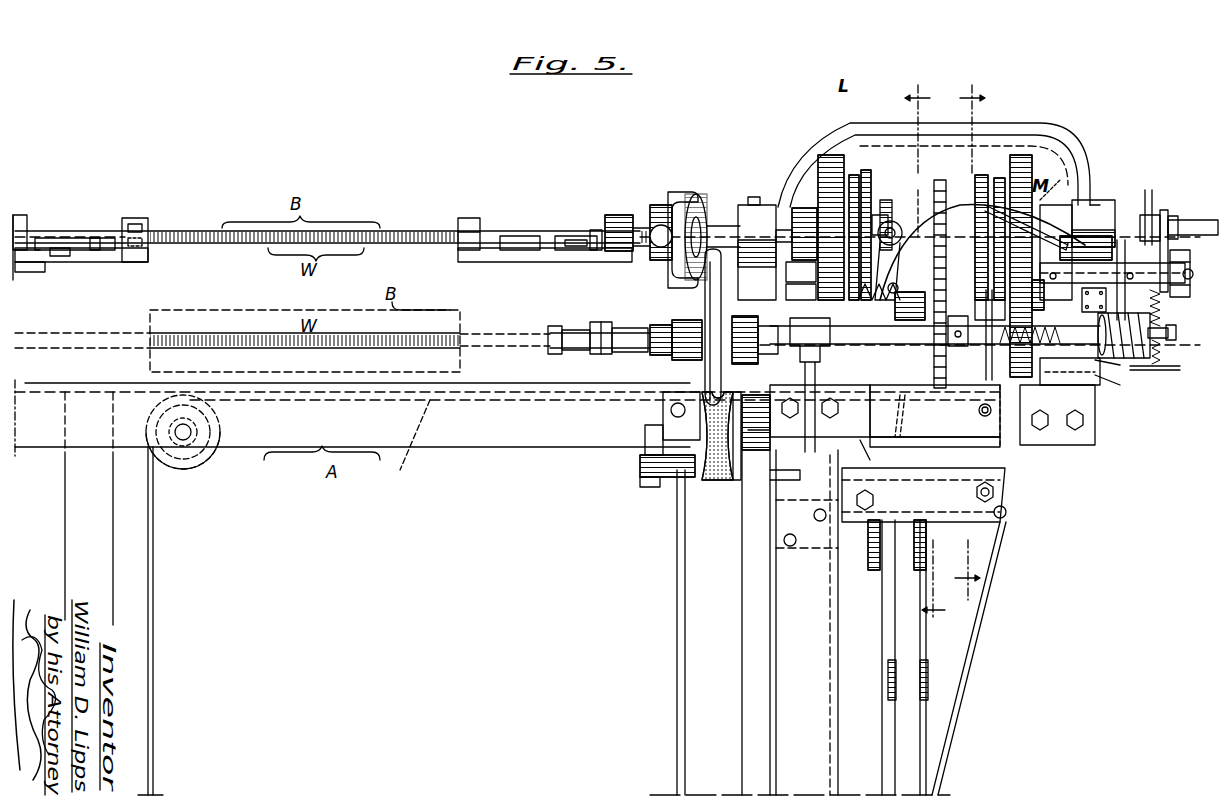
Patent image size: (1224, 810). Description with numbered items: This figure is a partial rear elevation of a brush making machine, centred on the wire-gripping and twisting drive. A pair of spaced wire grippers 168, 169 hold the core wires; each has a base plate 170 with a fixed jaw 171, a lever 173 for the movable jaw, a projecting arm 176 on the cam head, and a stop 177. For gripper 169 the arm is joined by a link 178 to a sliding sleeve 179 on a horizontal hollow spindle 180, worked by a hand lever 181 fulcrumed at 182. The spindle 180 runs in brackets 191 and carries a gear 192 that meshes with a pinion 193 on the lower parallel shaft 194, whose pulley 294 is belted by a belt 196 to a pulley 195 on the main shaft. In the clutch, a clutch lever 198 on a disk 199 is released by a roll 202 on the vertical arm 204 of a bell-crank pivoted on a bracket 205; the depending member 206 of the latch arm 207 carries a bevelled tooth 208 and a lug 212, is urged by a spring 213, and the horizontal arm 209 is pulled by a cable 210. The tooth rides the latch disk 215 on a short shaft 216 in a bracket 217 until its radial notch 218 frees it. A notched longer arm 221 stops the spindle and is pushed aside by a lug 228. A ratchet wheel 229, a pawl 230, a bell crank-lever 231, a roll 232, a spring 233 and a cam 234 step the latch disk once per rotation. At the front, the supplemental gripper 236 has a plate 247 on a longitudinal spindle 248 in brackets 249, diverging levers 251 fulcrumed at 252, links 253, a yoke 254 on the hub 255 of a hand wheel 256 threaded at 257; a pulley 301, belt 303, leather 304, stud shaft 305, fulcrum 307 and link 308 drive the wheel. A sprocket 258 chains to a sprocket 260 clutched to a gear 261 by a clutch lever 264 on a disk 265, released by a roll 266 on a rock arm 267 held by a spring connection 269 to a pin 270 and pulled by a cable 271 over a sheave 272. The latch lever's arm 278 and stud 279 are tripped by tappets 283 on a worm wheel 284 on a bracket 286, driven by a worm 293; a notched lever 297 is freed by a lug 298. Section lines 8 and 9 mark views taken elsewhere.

The wire gripper 168 is at (135, 218).
The wire gripper 169 is at (468, 218).
The base plate 170 is at (72, 262).
The fixed jaw 171 is at (150, 229).
The lever 173 is at (82, 240).
The projecting arm 176 is at (35, 262).
The stop 177 is at (28, 215).
The link 178 is at (565, 236).
The sliding sleeve 179 is at (668, 200).
The horizontal hollow spindle 180 is at (712, 240).
The hand lever 181 is at (622, 251).
The fulcrum 182 is at (718, 255).
The brackets 191 is at (750, 210).
The gear 192 is at (825, 155).
The pinion 193 is at (831, 420).
The lower parallel shaft 194 is at (931, 416).
The pulley 195 is at (930, 730).
The belt 196 is at (910, 690).
The clutch lever 198 is at (850, 175).
The disk 199 is at (866, 170).
The roll 202 is at (872, 218).
The vertical arm 204 is at (808, 586).
The bracket 205 is at (905, 505).
The depending member 206 is at (835, 265).
The latch arm 207 is at (982, 175).
The bevelled tooth portion 208 is at (1058, 240).
The horizontal arm 209 is at (1004, 514).
The cable 210 is at (940, 767).
The lug 212 is at (897, 276).
The spring 213 is at (826, 320).
The latch disk 215 is at (1088, 175).
The short horizontal shaft 216 is at (1184, 260).
The bracket 217 is at (1112, 274).
The radial notch 218 is at (1086, 280).
The longer arm 221 is at (893, 222).
The lug 228 is at (822, 272).
The ratchet wheel 229 is at (1182, 222).
The spring-pressed pawl 230 is at (1192, 275).
The bell crank-lever 231 is at (1172, 222).
The roll 232 is at (1158, 215).
The spring 233 is at (1180, 362).
The cam 234 is at (1148, 190).
The supplemental wire gripper 236 is at (553, 328).
The plate 247 is at (606, 328).
The longitudinal spindle 248 is at (628, 342).
The brackets 249 is at (1142, 476).
The diverging levers 251 is at (555, 354).
The fulcrum 252 is at (598, 354).
The links 253 is at (668, 432).
The yoke 254 is at (718, 318).
The hub portion 255 is at (700, 326).
The hand wheel 256 is at (700, 450).
The threaded portion 257 is at (748, 316).
The sprocket 258 is at (968, 360).
The sprocket 260 is at (922, 185).
The gear 261 is at (1040, 200).
The clutch lever 264 is at (1018, 155).
The disk 265 is at (1000, 178).
The roll 266 is at (1055, 185).
The rock arm 267 is at (1005, 470).
The spring connection 269 is at (1092, 385).
The pin 270 is at (1080, 355).
The cable 271 is at (154, 767).
The sheave 272 is at (196, 458).
The outwardly projecting arm 278 is at (990, 368).
The upstanding stud 279 is at (974, 399).
The tappets 283 is at (1162, 312).
The worm wheel 284 is at (1178, 334).
The bracket 286 is at (941, 180).
The worm 293 is at (1130, 358).
The pulley 294 is at (912, 326).
The spring-controlled lever 297 is at (962, 316).
The lug 298 is at (1008, 334).
The pulley 301 is at (742, 470).
The belt 303 is at (817, 434).
The leather lining 304 is at (717, 482).
The stud shaft 305 is at (678, 392).
The fulcrum 307 is at (652, 483).
The link 308 is at (677, 765).
The section line 8 is at (925, 355).
The section line 9 is at (966, 335).